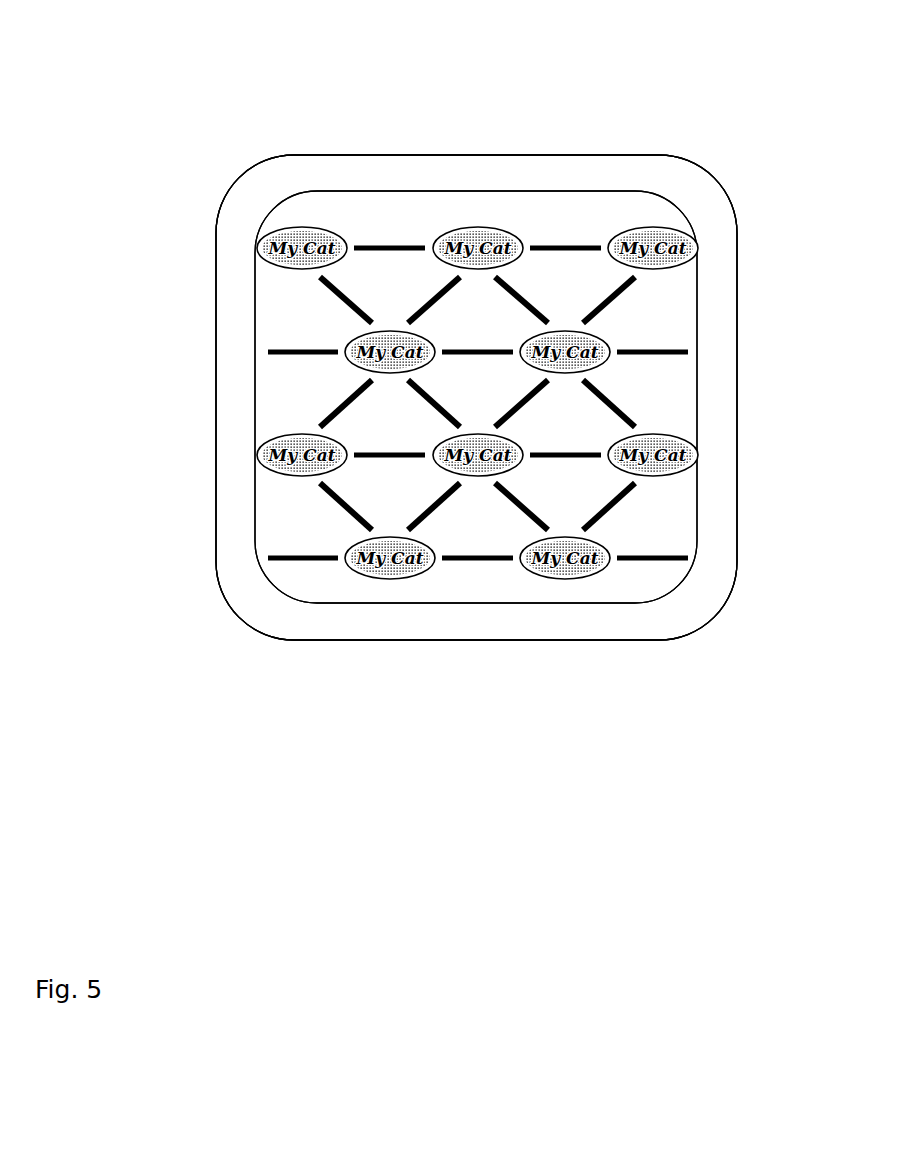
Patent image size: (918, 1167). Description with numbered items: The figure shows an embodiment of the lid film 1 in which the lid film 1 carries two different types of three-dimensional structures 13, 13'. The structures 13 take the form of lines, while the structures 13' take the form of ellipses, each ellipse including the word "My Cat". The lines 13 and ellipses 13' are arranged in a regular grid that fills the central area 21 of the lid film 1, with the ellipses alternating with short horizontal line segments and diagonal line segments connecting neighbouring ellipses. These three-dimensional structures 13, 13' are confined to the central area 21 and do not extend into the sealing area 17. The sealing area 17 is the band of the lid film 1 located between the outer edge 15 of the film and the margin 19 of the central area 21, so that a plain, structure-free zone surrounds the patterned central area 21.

The lid film 1 is at (558, 79).
The three-dimensional structures 13 is at (262, 639).
The three-dimensional structures 13' is at (340, 634).
The edge 15 is at (739, 262).
The sealing area 17 is at (725, 377).
The margin 19 is at (593, 603).
The central area 21 is at (432, 595).